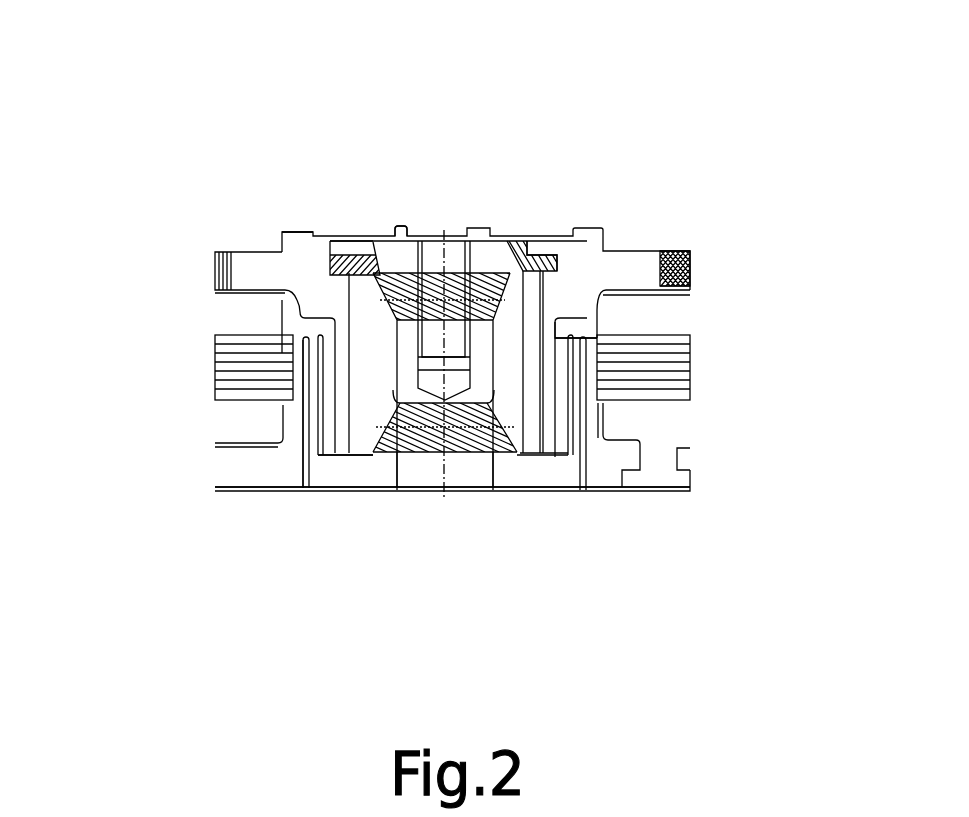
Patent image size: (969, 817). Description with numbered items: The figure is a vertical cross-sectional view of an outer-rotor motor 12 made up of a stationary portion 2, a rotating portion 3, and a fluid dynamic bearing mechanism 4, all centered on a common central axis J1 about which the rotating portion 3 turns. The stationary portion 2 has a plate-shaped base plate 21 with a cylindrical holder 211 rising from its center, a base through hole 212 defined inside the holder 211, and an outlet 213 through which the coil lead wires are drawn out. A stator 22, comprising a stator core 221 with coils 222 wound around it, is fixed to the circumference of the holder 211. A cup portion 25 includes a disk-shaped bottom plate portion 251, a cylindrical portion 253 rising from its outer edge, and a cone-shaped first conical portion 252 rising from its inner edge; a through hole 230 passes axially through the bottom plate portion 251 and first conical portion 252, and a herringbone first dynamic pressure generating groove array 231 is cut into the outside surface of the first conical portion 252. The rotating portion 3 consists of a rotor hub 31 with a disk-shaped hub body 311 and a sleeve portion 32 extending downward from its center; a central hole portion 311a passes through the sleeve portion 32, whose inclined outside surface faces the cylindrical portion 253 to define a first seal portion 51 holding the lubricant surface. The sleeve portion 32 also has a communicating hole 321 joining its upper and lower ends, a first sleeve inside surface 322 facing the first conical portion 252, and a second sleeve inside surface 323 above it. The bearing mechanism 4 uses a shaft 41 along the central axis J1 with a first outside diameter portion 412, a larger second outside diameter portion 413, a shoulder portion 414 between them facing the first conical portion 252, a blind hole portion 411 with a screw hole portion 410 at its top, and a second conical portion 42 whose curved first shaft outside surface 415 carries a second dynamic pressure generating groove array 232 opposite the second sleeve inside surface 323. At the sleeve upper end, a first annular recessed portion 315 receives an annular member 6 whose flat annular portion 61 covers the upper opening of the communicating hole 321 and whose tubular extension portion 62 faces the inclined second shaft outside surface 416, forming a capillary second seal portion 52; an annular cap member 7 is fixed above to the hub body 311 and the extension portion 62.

The motor 12 is at (95, 60).
The stationary portion 2 is at (156, 601).
The base plate 21 is at (303, 453).
The holder 211 is at (587, 410).
The base through hole 212 is at (575, 468).
The outlet 213 is at (675, 478).
The stator 22 is at (783, 292).
The stator core 221 is at (673, 338).
The coils 222 is at (673, 320).
The through hole 230 is at (403, 477).
The first dynamic pressure generating groove array 231 is at (500, 462).
The second dynamic pressure generating groove array 232 is at (475, 228).
The cup portion 25 is at (268, 604).
The bottom plate portion 251 is at (362, 470).
The first conical portion 252 is at (306, 478).
The cylindrical portion 253 is at (572, 335).
The rotating portion 3 is at (708, 146).
The rotor hub 31 is at (187, 127).
The hub body 311 is at (287, 228).
The central hole portion 311a is at (497, 413).
The first annular recessed portion 315 is at (550, 240).
The sleeve portion 32 is at (353, 343).
The communicating hole 321 is at (540, 462).
The first sleeve inside surface 322 is at (620, 377).
The second sleeve inside surface 323 is at (377, 292).
The fluid dynamic bearing mechanism 4 is at (318, 442).
The shaft 41 is at (405, 228).
The screw hole portion 410 is at (425, 228).
The hole portion 411 is at (390, 360).
The first outside diameter portion 412 is at (431, 462).
The second outside diameter portion 413 is at (217, 362).
The shoulder portion 414 is at (375, 400).
The first shaft outside surface 415 is at (388, 228).
The second shaft outside surface 416 is at (522, 228).
The second conical portion 42 is at (492, 228).
The first seal portion 51 is at (567, 337).
The second seal portion 52 is at (510, 228).
The annular member 6 is at (291, 112).
The annular portion 61 is at (342, 228).
The extension portion 62 is at (362, 228).
The cap member 7 is at (323, 230).
The central axis J1 is at (443, 228).